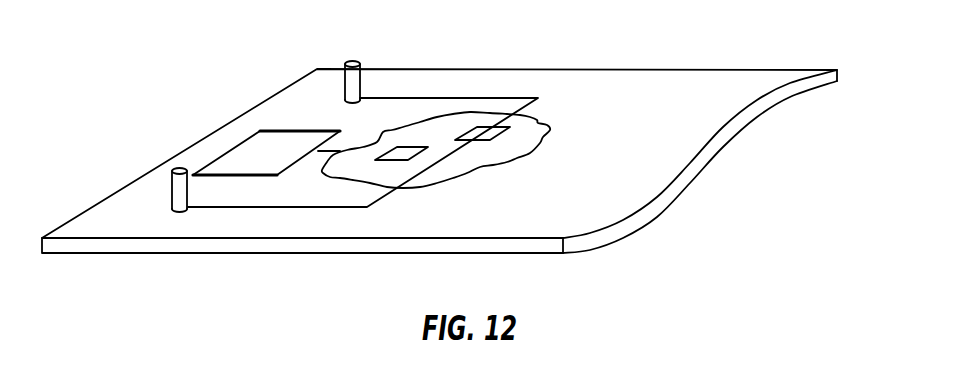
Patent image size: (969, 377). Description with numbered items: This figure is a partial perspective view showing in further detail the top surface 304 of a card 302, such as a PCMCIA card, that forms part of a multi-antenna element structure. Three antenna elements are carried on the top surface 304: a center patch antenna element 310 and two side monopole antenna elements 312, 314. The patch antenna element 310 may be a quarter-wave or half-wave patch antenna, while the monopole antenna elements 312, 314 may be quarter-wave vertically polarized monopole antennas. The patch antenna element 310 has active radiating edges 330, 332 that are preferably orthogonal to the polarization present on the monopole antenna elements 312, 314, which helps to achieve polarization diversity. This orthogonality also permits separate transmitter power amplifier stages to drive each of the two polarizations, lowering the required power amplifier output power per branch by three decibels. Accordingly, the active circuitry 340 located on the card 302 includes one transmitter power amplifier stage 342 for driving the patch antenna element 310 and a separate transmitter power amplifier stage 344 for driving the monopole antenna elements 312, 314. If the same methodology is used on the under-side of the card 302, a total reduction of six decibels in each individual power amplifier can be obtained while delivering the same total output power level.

The card 302 is at (483, 69).
The top surface 304 is at (673, 78).
The patch antenna element 310 is at (237, 157).
The monopole antenna element 312 is at (344, 81).
The monopole antenna element 314 is at (170, 192).
The active edge 330 is at (254, 175).
The active edge 332 is at (297, 129).
The active circuitry 340 is at (538, 124).
The transmitter power amplifier stage 342 is at (410, 152).
The transmitter power amplifier stage 344 is at (492, 132).